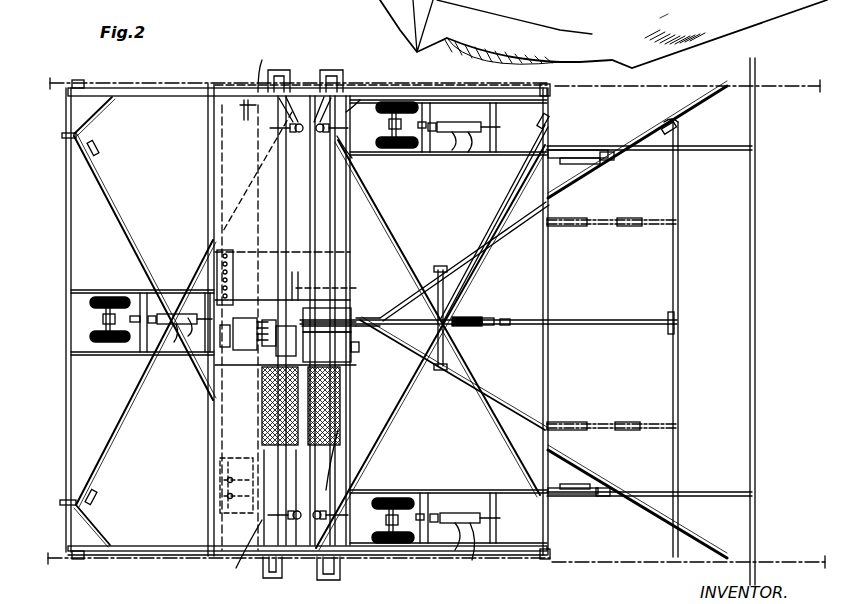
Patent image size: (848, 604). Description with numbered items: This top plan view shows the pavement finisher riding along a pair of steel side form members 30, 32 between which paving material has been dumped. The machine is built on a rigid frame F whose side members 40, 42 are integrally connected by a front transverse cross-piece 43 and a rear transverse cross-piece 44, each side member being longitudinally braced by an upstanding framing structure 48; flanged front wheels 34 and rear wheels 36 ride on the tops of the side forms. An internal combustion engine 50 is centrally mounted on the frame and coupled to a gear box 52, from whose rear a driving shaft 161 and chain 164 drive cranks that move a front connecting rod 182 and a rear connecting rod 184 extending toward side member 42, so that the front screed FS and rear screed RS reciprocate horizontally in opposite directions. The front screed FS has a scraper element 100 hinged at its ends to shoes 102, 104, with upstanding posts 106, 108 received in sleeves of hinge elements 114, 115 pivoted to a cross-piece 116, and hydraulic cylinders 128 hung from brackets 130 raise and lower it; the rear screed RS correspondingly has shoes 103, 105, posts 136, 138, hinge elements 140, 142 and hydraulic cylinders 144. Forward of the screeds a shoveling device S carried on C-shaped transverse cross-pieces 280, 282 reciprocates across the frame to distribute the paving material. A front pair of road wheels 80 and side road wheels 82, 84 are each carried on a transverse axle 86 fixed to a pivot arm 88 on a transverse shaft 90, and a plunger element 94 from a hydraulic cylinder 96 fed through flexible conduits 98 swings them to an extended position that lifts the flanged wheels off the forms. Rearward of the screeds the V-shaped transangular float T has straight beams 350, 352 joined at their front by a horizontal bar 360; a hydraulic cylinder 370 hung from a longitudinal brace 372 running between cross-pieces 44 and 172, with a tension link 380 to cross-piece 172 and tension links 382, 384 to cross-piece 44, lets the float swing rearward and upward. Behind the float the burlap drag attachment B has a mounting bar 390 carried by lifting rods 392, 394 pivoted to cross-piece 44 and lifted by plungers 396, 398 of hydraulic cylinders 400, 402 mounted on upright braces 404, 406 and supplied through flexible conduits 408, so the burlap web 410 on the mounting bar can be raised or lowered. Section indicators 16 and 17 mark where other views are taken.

The burlap drag attachment B is at (780, 16).
The transangular float T is at (580, 456).
The rigid frame F is at (136, 548).
The shoveling device S is at (220, 476).
The front screed FS is at (280, 572).
The rear screed RS is at (326, 574).
The section line 16 is at (185, 107).
The section line 17 is at (645, 107).
The side form member 30 is at (696, 86).
The side form member 32 is at (670, 565).
The front wheels 34 is at (82, 82).
The rear wheels 36 is at (548, 574).
The side member 40 is at (148, 92).
The side member 42 is at (140, 550).
The front transverse cross-piece 43 is at (74, 250).
The rear transverse cross-piece 44 is at (548, 362).
The upstanding framing structure 48 is at (242, 88).
The internal combustion engine 50 is at (287, 348).
The gear box 52 is at (238, 345).
The front pair of road wheels 80 is at (110, 300).
The side road wheels 82 is at (394, 150).
The side road wheels 84 is at (400, 512).
The transverse axle 86 is at (110, 342).
The pivot arm 88 is at (136, 318).
The transverse shaft 90 is at (142, 348).
The reciprocating plunger element 94 is at (165, 314).
The hydraulic cylinder 96 is at (164, 324).
The flexible conduits 98 is at (186, 316).
The scraper element 100 is at (284, 222).
The shoe 102 is at (284, 90).
The shoe 103 is at (343, 70).
The shoe 104 is at (280, 578).
The shoe 105 is at (342, 578).
The upstanding post 106 is at (314, 94).
The upstanding post 108 is at (240, 566).
The hinge element 114 is at (286, 150).
The hinge element 115 is at (256, 526).
The cross-piece 116 is at (340, 205).
The hydraulic cylinders 128 is at (276, 112).
The bracket 130 is at (275, 59).
The post 136 is at (340, 126).
The post 138 is at (340, 516).
The hinge element 140 is at (360, 100).
The hinge element 142 is at (342, 434).
The hydraulic cylinders 144 is at (358, 152).
The driving shaft 161 is at (330, 310).
The chain 164 is at (296, 298).
The cross-piece 172 is at (345, 238).
The front connecting rod 182 is at (290, 284).
The rear connecting rod 184 is at (340, 292).
The transverse cross-piece 280 is at (214, 504).
The transverse cross-piece 282 is at (248, 510).
The straight beam 350 is at (570, 218).
The straight beam 352 is at (476, 396).
The horizontal bar 360 is at (444, 292).
The hydraulic cylinder 370 is at (468, 328).
The longitudinal brace 372 is at (546, 290).
The tension link 380 is at (390, 340).
The tension link 382 is at (636, 218).
The tension link 384 is at (632, 422).
The mounting bar 390 is at (784, 392).
The lifting rod 392 is at (698, 152).
The lifting rod 394 is at (720, 494).
The reciprocating plunger 396 is at (620, 160).
The reciprocating plunger 398 is at (640, 490).
The hydraulic cylinder 400 is at (578, 148).
The hydraulic cylinder 402 is at (570, 498).
The upright brace 404 is at (536, 170).
The upright brace 406 is at (534, 486).
The flexible conduits 408 is at (600, 158).
The burlap web 410 is at (716, 14).